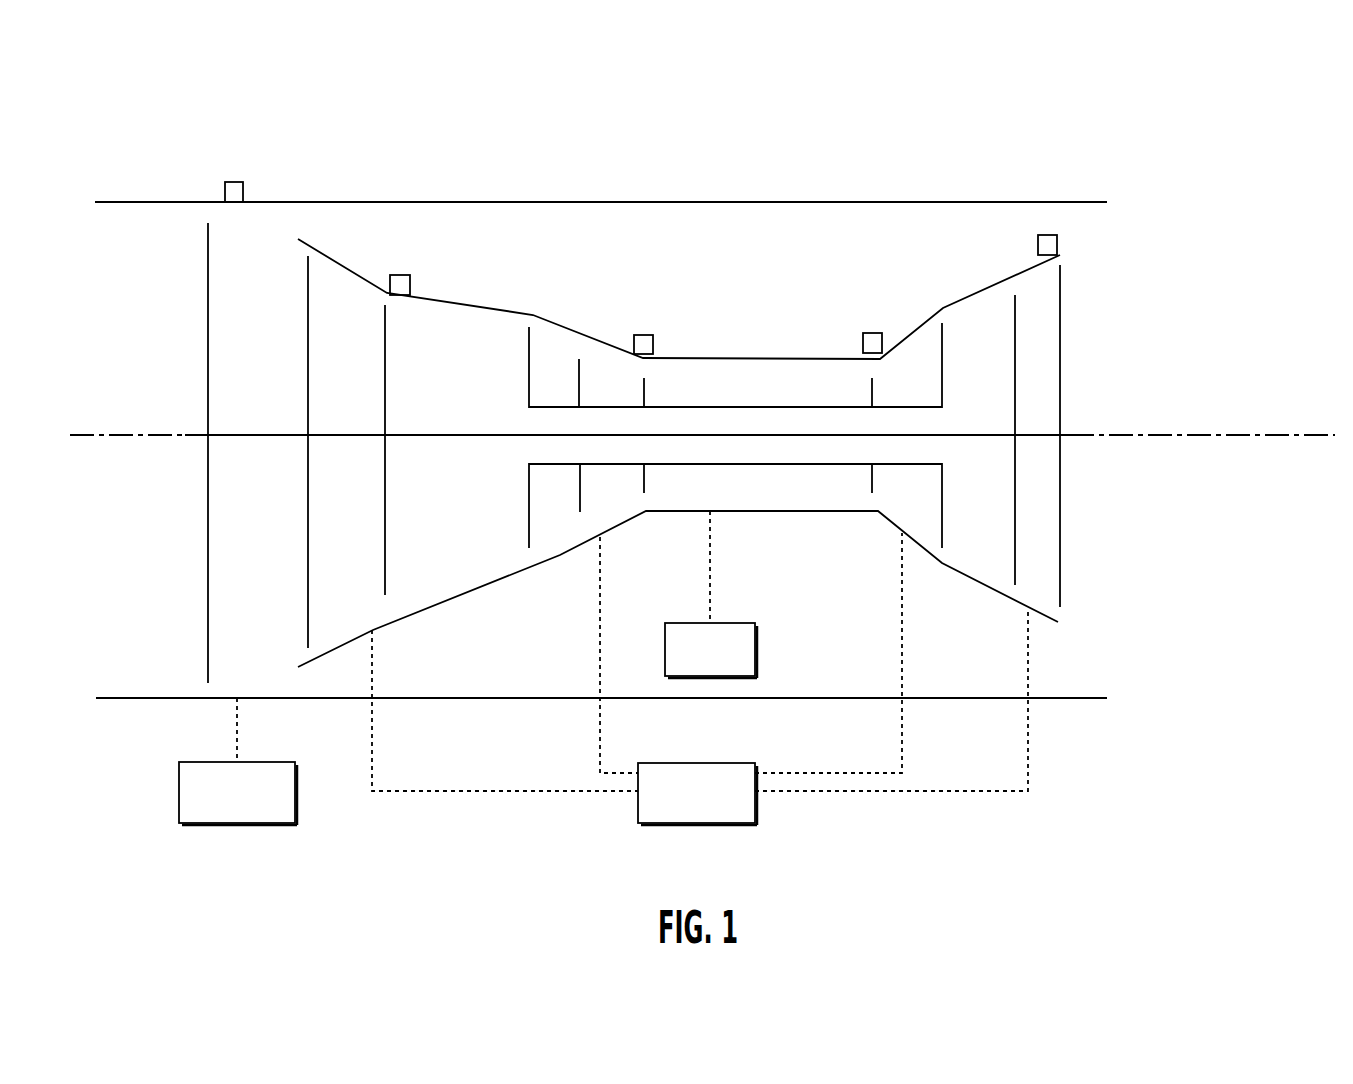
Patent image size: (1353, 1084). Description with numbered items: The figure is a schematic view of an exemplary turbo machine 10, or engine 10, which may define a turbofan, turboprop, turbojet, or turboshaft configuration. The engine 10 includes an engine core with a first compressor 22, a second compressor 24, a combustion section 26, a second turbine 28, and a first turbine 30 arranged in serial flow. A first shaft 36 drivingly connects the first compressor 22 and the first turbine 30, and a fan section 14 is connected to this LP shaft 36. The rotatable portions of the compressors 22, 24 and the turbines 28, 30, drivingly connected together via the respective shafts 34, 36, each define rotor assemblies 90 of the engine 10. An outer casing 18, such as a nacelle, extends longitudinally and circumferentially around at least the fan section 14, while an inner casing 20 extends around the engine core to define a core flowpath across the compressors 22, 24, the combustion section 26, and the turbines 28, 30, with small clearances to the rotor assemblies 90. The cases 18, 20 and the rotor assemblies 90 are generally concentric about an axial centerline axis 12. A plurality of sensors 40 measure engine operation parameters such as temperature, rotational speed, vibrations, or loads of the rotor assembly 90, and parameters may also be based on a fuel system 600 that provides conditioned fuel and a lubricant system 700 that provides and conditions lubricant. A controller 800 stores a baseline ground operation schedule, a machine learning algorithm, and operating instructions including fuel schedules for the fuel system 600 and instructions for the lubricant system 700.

The turbo machine 10 is at (858, 142).
The axial centerline axis 12 is at (1225, 435).
The fan section 14 is at (179, 256).
The outer casing 18 is at (598, 202).
The inner casing 20 is at (452, 303).
The first compressor 22 is at (359, 253).
The second compressor 24 is at (577, 318).
The combustion section 26 is at (772, 354).
The second turbine 28 is at (900, 321).
The first turbine 30 is at (984, 276).
The shaft 34 is at (547, 408).
The first shaft 36 is at (270, 437).
The sensors 40 is at (234, 182).
The rotor assemblies 90 is at (1074, 397).
The fuel system 600 is at (692, 662).
The lubricant system 700 is at (677, 808).
The controller 800 is at (217, 808).